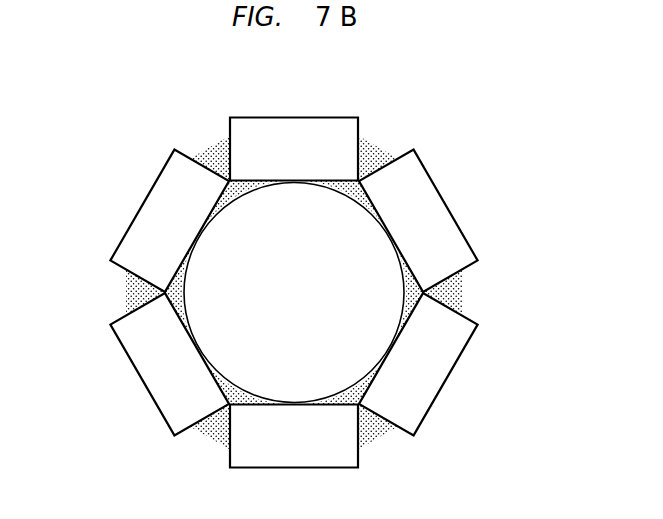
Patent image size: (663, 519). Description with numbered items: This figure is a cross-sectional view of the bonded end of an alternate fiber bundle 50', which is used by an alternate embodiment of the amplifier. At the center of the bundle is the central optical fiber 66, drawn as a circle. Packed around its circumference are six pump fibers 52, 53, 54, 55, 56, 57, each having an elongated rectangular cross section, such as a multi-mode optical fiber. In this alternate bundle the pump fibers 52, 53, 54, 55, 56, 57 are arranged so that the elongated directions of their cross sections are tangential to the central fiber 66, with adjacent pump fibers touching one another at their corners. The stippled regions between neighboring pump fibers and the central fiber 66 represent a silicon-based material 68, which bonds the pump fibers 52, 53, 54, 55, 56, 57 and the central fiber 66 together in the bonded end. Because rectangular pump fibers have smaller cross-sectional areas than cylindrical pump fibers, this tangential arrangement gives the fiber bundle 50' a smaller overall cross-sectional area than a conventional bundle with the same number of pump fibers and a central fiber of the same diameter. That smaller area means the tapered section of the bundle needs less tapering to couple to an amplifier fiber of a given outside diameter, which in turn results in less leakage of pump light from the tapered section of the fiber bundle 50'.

The fiber bundle 50' is at (485, 81).
The pump fiber 52 is at (318, 116).
The pump fiber 53 is at (443, 204).
The pump fiber 54 is at (438, 395).
The pump fiber 55 is at (270, 467).
The pump fiber 56 is at (143, 380).
The pump fiber 57 is at (134, 218).
The central optical fiber 66 is at (308, 305).
The silicon-based material 68 is at (214, 140).